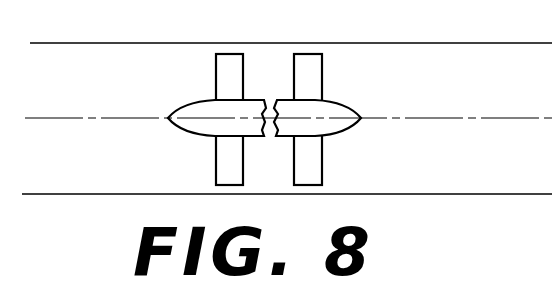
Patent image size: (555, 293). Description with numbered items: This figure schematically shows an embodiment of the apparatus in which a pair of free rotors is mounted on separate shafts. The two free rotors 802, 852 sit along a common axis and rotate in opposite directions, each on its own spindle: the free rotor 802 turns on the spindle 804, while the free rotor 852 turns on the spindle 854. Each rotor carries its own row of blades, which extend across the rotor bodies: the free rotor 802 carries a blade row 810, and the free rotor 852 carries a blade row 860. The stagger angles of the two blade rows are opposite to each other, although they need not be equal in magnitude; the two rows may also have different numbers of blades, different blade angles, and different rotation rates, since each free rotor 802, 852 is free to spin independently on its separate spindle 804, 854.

The free rotor 802 is at (358, 117).
The spindle 804 is at (338, 124).
The blade row 810 is at (311, 69).
The free rotor 852 is at (170, 126).
The spindle 854 is at (195, 123).
The blade row 860 is at (227, 74).